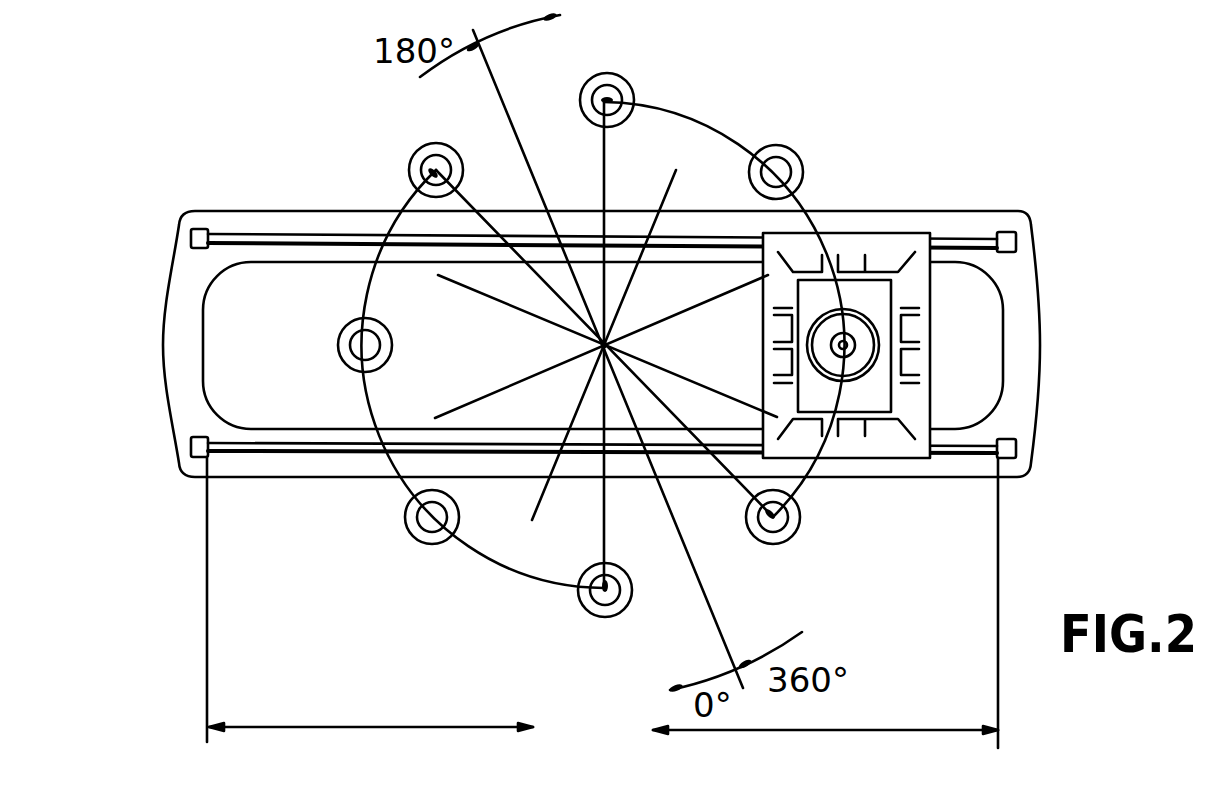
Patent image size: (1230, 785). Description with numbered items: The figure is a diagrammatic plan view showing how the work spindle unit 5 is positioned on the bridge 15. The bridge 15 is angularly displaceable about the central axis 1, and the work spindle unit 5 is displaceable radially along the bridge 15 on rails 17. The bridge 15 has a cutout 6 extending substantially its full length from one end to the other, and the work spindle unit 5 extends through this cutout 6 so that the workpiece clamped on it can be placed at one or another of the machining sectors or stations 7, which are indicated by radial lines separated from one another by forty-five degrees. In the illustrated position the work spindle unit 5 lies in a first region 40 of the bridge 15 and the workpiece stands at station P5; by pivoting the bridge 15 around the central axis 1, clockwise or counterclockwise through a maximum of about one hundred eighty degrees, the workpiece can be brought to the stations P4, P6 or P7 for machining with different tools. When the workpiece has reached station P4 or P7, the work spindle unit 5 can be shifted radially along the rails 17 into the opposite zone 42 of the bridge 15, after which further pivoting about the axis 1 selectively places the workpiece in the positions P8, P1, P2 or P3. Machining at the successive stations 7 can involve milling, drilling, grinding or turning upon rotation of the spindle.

The central axis 1 is at (604, 345).
The work spindle unit 5 is at (878, 216).
The cutout 6 is at (215, 378).
The machining sectors or stations 7 is at (606, 359).
The bridge 15 is at (172, 262).
The rails 17 is at (983, 238).
The first region 40 is at (840, 731).
The opposite zone 42 is at (357, 729).
The station P1 is at (418, 534).
The station P2 is at (345, 335).
The station P3 is at (418, 153).
The station P4 is at (798, 531).
The station P5 is at (870, 342).
The station P6 is at (790, 150).
The station P7 is at (621, 80).
The station P8 is at (595, 609).